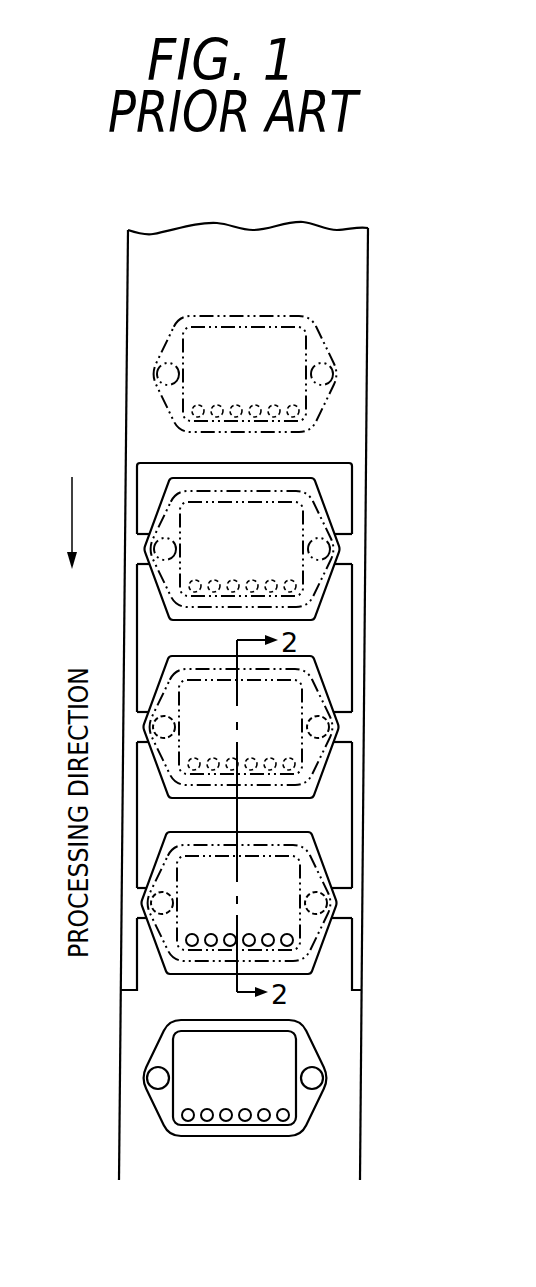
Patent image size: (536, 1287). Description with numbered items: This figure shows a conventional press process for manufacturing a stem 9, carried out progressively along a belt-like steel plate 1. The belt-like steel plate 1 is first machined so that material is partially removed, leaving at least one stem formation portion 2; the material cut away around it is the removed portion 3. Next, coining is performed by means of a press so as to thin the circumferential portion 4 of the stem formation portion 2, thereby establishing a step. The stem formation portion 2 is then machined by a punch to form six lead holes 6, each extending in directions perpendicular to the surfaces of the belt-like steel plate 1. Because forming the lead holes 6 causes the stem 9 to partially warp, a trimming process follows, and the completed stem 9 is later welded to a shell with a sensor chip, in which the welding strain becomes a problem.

The belt-like steel plate 1 is at (357, 380).
The stem formation portion 2 is at (327, 327).
The removed portion 3 is at (340, 470).
The circumferential portion 4 is at (317, 713).
The lead holes 6 is at (217, 943).
The stem 9 is at (272, 1137).